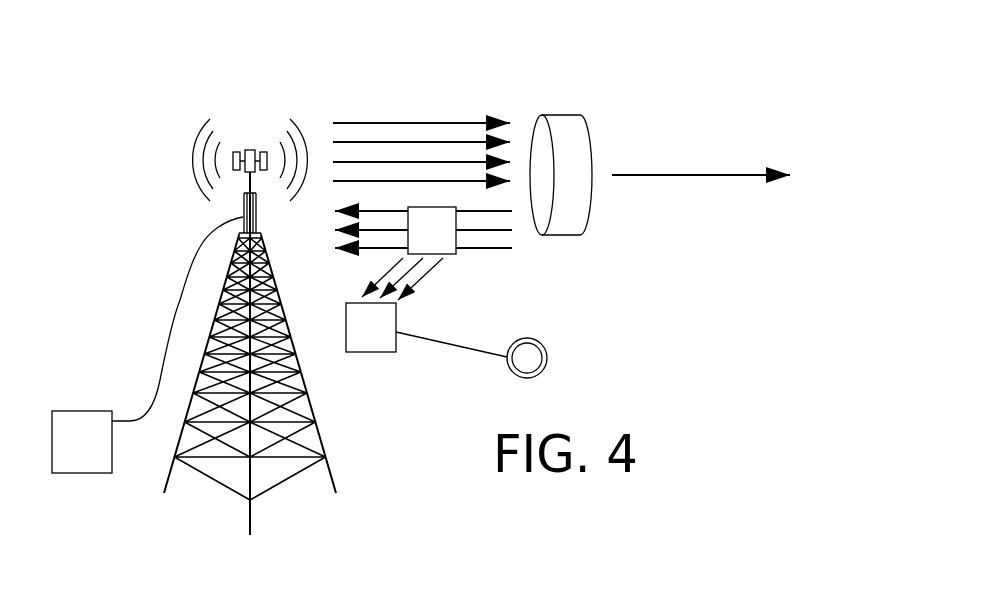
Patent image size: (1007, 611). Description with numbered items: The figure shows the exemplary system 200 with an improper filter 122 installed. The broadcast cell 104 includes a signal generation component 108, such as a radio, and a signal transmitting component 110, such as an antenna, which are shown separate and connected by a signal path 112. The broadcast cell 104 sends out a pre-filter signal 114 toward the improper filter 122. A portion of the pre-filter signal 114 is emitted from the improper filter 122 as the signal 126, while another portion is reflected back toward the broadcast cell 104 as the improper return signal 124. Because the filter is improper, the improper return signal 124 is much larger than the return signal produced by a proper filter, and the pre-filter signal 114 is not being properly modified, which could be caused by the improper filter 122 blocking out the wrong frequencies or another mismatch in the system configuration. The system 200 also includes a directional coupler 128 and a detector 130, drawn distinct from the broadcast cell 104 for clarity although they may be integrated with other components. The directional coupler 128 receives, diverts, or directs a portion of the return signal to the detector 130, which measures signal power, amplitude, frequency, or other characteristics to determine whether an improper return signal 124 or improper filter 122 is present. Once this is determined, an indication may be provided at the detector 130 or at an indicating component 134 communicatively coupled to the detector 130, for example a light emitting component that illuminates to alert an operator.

The system 200 is at (562, 50).
The broadcast cell 104 is at (320, 438).
The signal generation component 108 is at (90, 410).
The signal transmitting component 110 is at (250, 150).
The signal path 112 is at (184, 277).
The pre-filter signal 114 is at (416, 120).
The improper filter 122 is at (560, 237).
The improper return signal 124 is at (484, 252).
The signal 126 is at (699, 172).
The directional coupler 128 is at (446, 256).
The detector 130 is at (370, 353).
The indicating component 134 is at (548, 355).